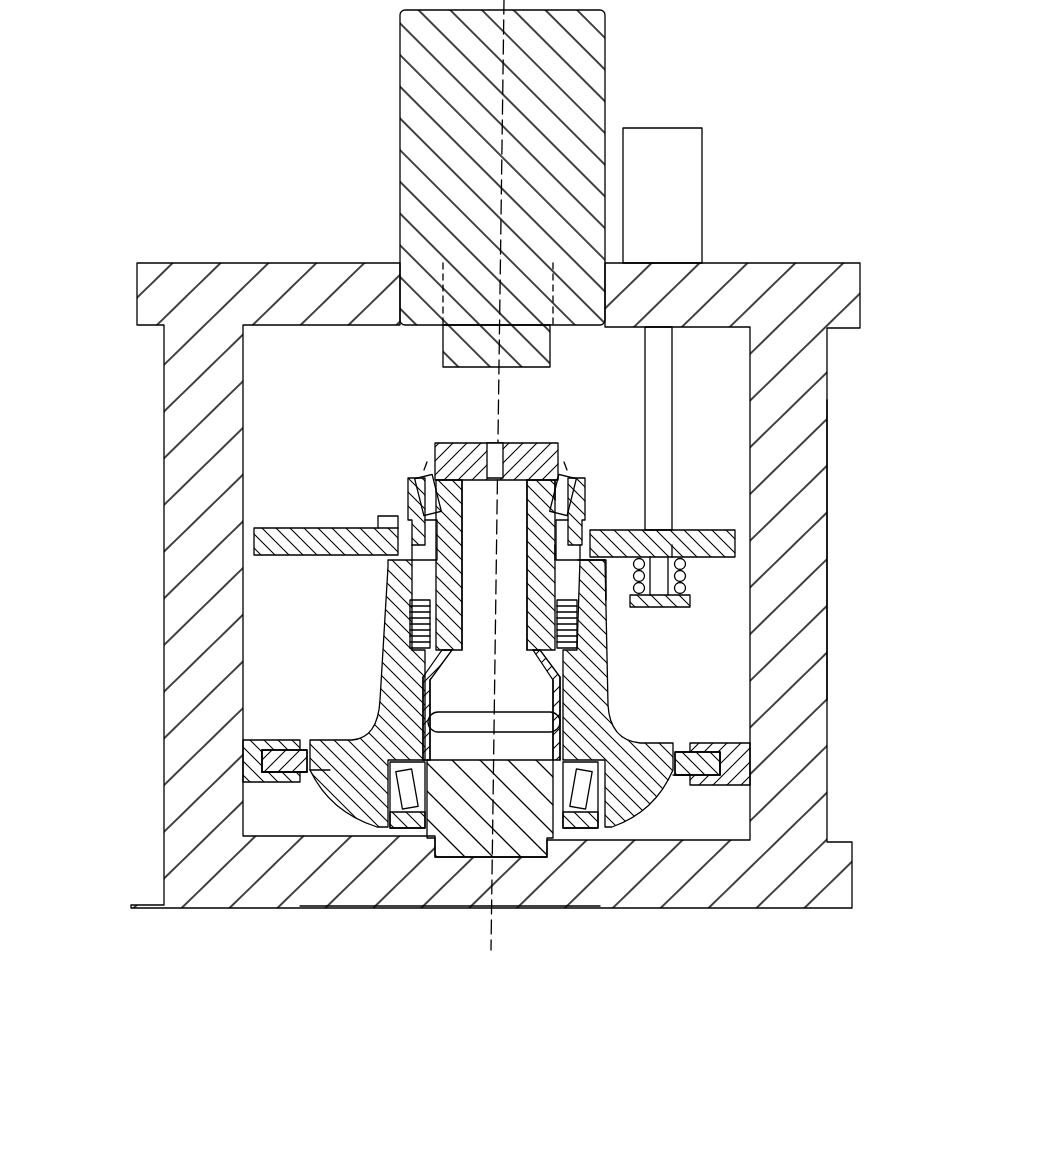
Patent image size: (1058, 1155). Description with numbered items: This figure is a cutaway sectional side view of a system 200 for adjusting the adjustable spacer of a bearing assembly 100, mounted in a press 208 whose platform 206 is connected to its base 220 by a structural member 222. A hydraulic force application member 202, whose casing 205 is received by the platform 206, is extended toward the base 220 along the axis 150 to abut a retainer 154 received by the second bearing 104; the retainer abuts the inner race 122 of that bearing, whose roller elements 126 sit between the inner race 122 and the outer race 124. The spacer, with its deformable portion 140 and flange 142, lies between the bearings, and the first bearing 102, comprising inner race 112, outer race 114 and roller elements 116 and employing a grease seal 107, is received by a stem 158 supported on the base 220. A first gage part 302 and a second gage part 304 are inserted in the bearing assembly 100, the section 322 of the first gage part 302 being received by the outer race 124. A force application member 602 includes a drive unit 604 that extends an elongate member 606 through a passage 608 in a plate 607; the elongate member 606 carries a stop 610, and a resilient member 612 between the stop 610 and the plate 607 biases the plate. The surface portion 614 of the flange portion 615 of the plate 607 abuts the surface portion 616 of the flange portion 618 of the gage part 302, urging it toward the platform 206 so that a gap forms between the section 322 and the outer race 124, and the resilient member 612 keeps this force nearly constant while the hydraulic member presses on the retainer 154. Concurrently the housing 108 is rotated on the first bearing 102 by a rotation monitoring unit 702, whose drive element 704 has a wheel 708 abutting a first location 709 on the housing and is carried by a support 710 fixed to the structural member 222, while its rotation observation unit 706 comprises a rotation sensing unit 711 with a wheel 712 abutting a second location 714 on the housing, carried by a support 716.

The bearing assembly 100 is at (463, 606).
The first bearing 102 is at (400, 748).
The second bearing 104 is at (526, 470).
The grease seal 107 is at (580, 820).
The housing 108 is at (600, 726).
The inner race 112 is at (420, 816).
The outer race 114 is at (580, 778).
The roller elements 116 is at (412, 778).
The inner race 122 is at (447, 490).
The outer race 124 is at (580, 640).
The roller elements 126 is at (549, 476).
The deformable portion 140 is at (423, 713).
The flange 142 is at (548, 665).
The axis 150 is at (494, 938).
The retainer 154 is at (445, 445).
The stem 158 is at (540, 848).
The system 200 is at (118, 925).
The hydraulic force application member 202 is at (553, 345).
The casing 205 is at (592, 68).
The platform 206 is at (750, 278).
The press 208 is at (538, 575).
The base 220 is at (302, 892).
The structural member 222 is at (810, 568).
The first gage part 302 is at (588, 478).
The second gage part 304 is at (534, 596).
The section 322 is at (558, 624).
The force application member 602 is at (768, 483).
The drive unit 604 is at (685, 152).
The elongate member 606 is at (672, 355).
The plate 607 is at (710, 535).
The passage 608 is at (675, 545).
The stop 610 is at (665, 607).
The resilient member 612 is at (686, 571).
The surface portion 614 is at (612, 582).
The flange portion 615 is at (355, 558).
The surface portion 616 is at (385, 522).
The flange portion 618 is at (586, 520).
The rotation monitoring unit 702 is at (797, 758).
The drive element 704 is at (690, 752).
The rotation observation unit 706 is at (300, 748).
The wheel 708 is at (700, 775).
The first location 709 is at (660, 790).
The support 710 is at (735, 762).
The rotation sensing unit 711 is at (272, 742).
The wheel 712 is at (280, 774).
The second location 714 is at (318, 795).
The support 716 is at (187, 736).